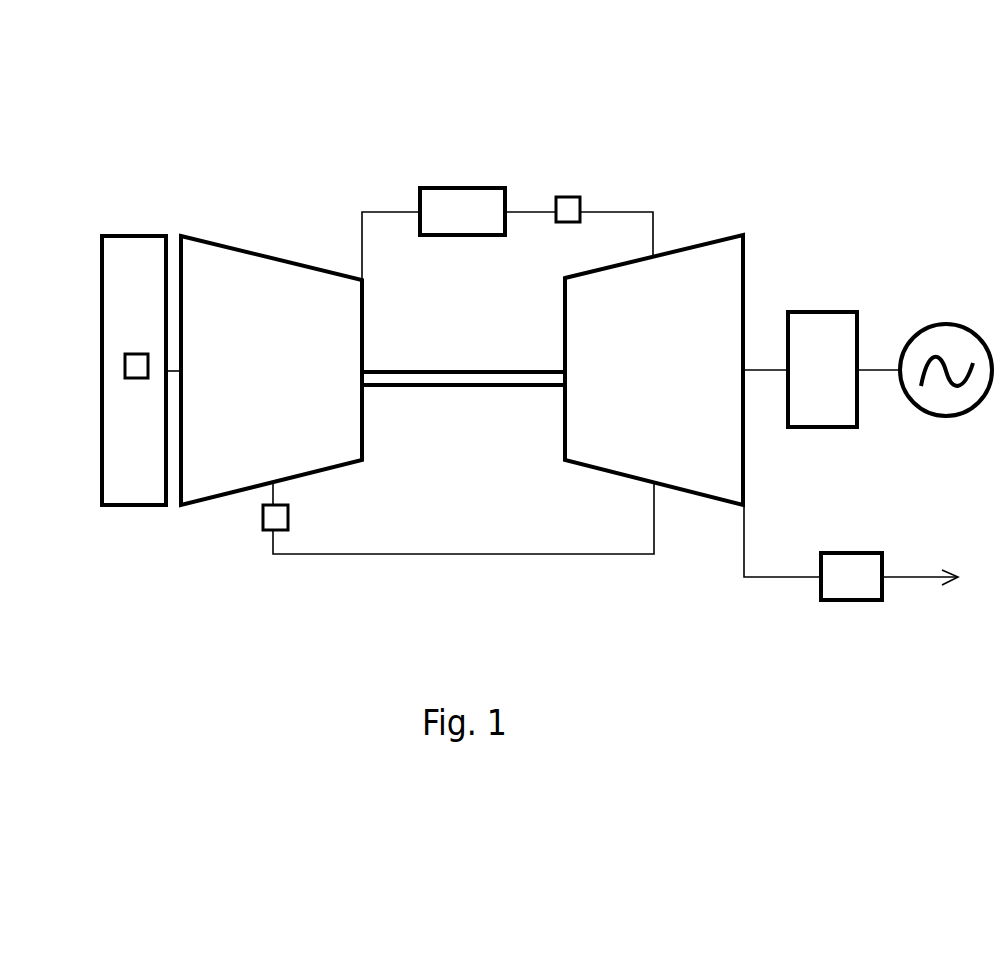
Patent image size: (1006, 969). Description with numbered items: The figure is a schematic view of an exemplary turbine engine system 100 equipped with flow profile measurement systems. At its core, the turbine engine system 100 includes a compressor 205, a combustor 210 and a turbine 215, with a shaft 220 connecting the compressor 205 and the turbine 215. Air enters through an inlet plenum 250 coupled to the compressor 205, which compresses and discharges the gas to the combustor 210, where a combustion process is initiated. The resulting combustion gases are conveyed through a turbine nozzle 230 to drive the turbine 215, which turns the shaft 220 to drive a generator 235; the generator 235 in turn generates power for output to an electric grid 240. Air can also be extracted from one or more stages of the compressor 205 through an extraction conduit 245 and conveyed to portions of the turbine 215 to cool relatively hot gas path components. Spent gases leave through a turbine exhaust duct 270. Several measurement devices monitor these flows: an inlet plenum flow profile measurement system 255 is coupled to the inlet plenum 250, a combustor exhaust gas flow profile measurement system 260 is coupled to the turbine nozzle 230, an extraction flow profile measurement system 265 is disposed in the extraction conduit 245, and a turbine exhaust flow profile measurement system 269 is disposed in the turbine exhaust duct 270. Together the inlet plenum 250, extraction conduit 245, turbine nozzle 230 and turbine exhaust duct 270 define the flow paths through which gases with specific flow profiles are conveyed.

The turbine engine system 100 is at (386, 94).
The compressor 205 is at (272, 257).
The combustor 210 is at (463, 188).
The turbine 215 is at (727, 236).
The shaft 220 is at (503, 370).
The turbine nozzle 230 is at (647, 212).
The generator 235 is at (823, 312).
The electric grid 240 is at (947, 415).
The extraction conduit 245 is at (517, 554).
The inlet plenum 250 is at (133, 235).
The inlet plenum flow profile measurement system 255 is at (135, 380).
The combustor exhaust gas flow profile measurement system 260 is at (568, 197).
The extraction flow profile measurement system 265 is at (263, 518).
The turbine exhaust flow profile measurement system 269 is at (852, 553).
The turbine exhaust duct 270 is at (900, 578).